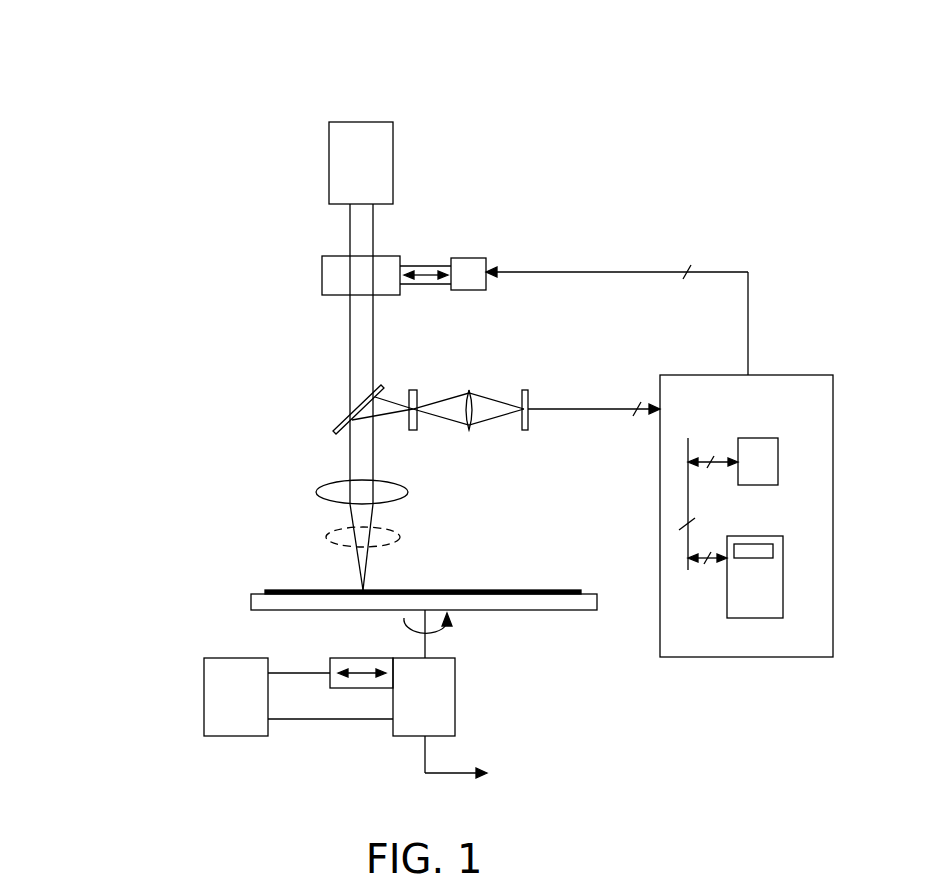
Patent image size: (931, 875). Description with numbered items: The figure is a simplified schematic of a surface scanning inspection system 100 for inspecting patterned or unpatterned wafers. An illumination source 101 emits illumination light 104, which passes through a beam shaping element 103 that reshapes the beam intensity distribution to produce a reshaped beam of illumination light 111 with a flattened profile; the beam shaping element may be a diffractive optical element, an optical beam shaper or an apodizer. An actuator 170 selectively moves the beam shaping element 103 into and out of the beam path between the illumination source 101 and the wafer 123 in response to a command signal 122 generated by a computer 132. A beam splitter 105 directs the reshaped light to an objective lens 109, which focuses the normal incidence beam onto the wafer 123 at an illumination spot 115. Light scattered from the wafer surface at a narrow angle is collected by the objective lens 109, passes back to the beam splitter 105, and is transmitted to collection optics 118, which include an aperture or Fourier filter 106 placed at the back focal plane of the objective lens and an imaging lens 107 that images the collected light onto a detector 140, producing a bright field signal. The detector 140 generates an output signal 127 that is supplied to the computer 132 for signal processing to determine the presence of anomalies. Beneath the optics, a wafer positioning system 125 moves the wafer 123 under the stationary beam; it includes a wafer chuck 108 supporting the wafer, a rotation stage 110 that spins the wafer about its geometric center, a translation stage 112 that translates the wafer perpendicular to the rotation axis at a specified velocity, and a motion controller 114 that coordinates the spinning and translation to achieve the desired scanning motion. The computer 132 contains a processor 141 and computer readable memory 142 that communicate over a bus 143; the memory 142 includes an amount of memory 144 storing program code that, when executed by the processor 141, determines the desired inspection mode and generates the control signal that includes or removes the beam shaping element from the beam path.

The surface scanning inspection system 100 is at (306, 60).
The illumination source 101 is at (347, 173).
The beam shaping element 103 is at (322, 276).
The illumination light 104 is at (350, 232).
The beam splitter 105 is at (336, 432).
The aperture or Fourier filter 106 is at (415, 390).
The imaging lens 107 is at (470, 390).
The wafer chuck 108 is at (251, 603).
The objective lens 109 is at (408, 490).
The rotation stage 110 is at (410, 702).
The reshaped beam of illumination light 111 is at (327, 536).
The translation stage 112 is at (330, 658).
The motion controller 114 is at (222, 702).
The illumination spot 115 is at (366, 589).
The collection optics 118 is at (400, 352).
The command signal 122 is at (578, 264).
The wafer 123 is at (576, 591).
The wafer positioning system 125 is at (173, 660).
The output signal 127 is at (610, 398).
The computer 132 is at (732, 403).
The detector 140 is at (525, 390).
The processor 141 is at (778, 462).
The computer readable memory 142 is at (727, 598).
The bus 143 is at (688, 500).
The memory storing program code 144 is at (773, 552).
The actuator 170 is at (456, 258).